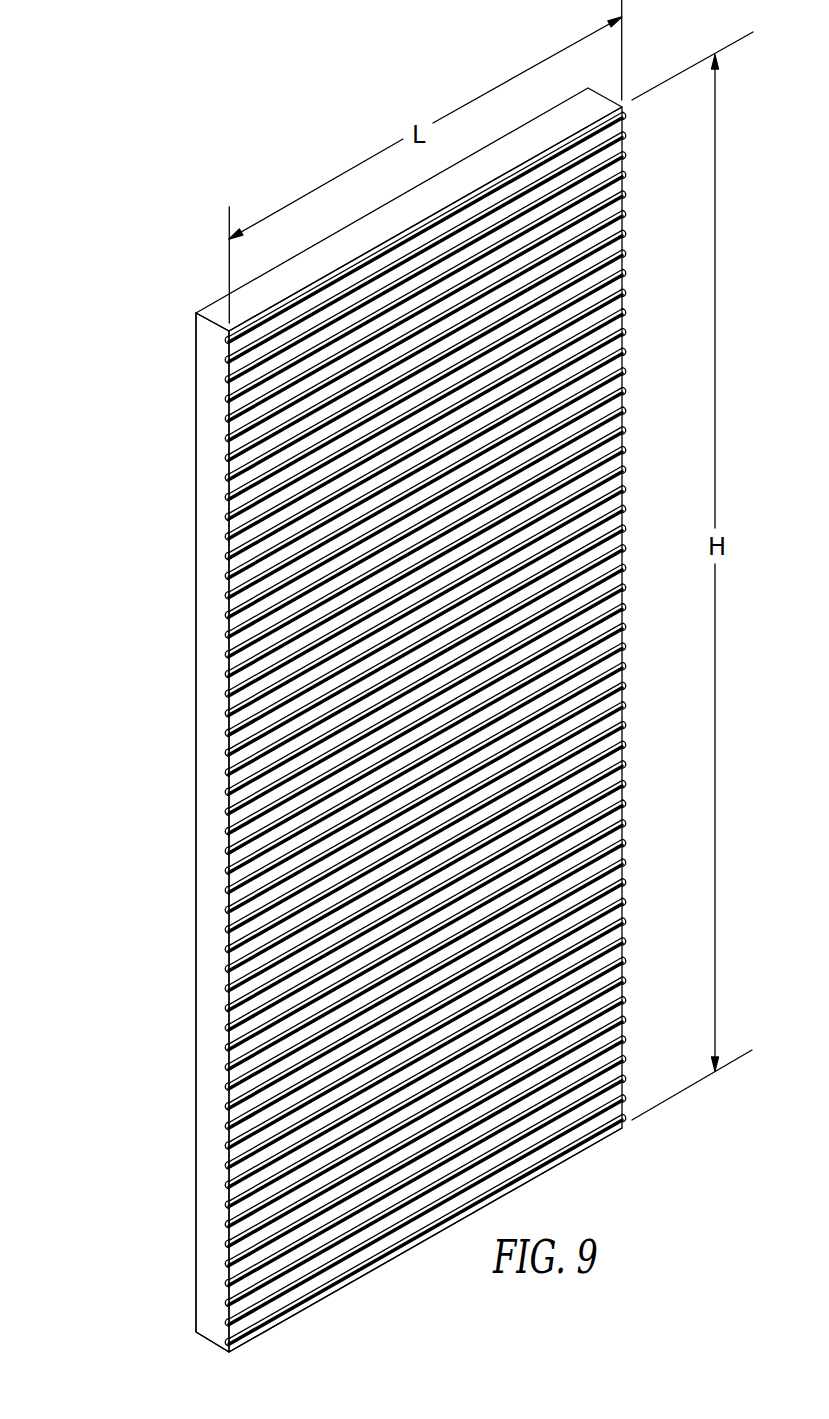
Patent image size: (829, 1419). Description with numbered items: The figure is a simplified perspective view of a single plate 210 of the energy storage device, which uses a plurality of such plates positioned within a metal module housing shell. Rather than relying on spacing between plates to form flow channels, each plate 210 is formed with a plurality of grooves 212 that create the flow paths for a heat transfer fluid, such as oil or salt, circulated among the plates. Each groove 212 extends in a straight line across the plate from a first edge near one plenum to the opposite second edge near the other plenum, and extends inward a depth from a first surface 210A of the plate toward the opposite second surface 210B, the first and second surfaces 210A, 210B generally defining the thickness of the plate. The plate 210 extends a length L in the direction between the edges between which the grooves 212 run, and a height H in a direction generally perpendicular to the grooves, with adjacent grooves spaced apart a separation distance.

The plate 210 is at (385, 720).
The first surface 210A is at (461, 729).
The second surface 210B is at (188, 589).
The groove 212 is at (623, 342).